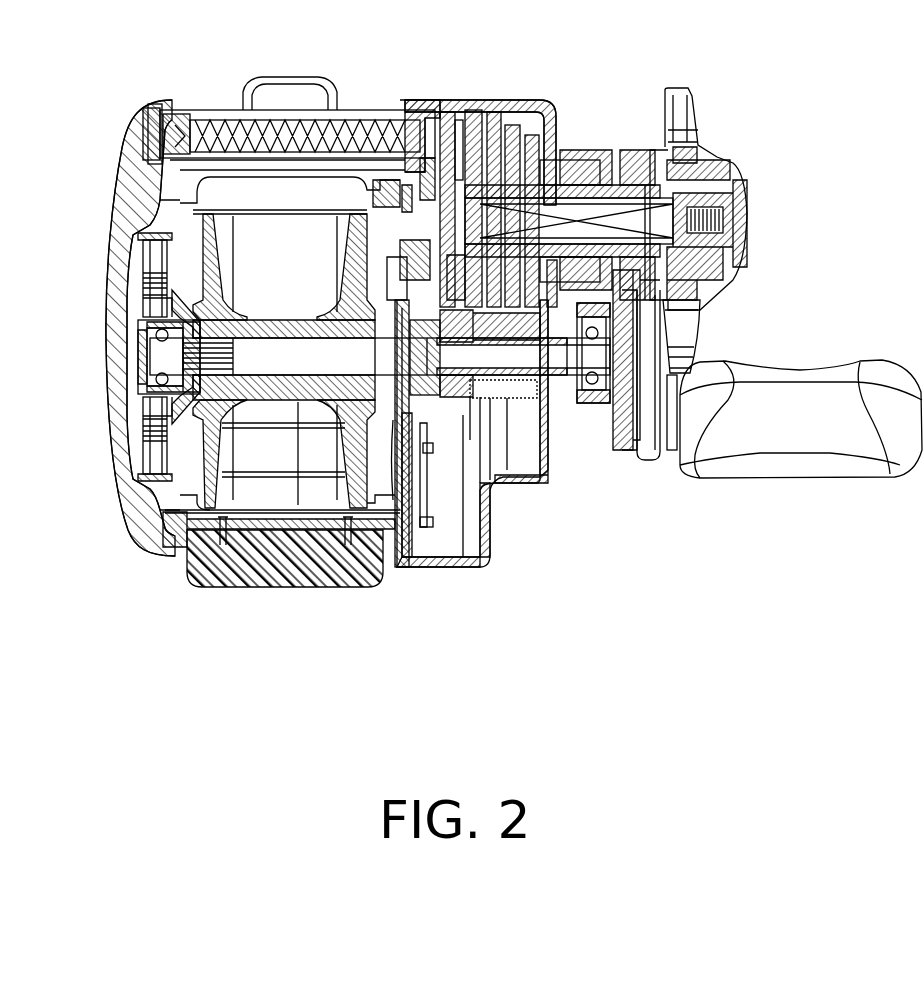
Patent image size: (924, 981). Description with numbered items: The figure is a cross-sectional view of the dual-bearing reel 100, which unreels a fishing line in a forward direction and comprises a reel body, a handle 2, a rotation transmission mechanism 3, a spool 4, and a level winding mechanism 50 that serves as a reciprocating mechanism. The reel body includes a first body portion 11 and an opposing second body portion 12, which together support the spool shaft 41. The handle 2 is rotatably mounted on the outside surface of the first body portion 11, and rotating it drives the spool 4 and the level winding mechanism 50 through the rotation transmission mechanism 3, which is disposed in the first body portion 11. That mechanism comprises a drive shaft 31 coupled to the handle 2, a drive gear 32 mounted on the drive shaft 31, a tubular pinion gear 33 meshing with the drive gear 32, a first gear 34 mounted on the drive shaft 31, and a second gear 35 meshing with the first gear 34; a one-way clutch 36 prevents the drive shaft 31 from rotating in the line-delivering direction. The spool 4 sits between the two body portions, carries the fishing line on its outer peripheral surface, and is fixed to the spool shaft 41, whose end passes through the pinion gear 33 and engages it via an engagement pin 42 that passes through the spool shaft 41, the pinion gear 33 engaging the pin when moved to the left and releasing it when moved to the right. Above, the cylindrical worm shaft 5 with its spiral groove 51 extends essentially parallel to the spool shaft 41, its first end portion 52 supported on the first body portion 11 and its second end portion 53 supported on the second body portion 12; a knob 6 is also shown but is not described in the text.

The dual-bearing reel 100 is at (795, 102).
The handle 2 is at (650, 462).
The rotation transmission mechanism 3 is at (481, 157).
The spool 4 is at (272, 390).
The worm shaft 5 is at (297, 94).
The clutch lever 6 is at (340, 110).
The first body portion 11 is at (444, 570).
The second body portion 12 is at (158, 558).
The drive shaft 31 is at (608, 200).
The drive gear 32 is at (505, 112).
The pinion gear 33 is at (513, 400).
The first gear 34 is at (472, 130).
The second gear 35 is at (447, 118).
The one-way clutch 36 is at (560, 150).
The spool shaft 41 is at (298, 360).
The engagement pin 42 is at (399, 572).
The level winding mechanism 50 is at (213, 98).
The spiral groove 51 is at (212, 120).
The first end portion 52 is at (420, 130).
The second end portion 53 is at (170, 115).